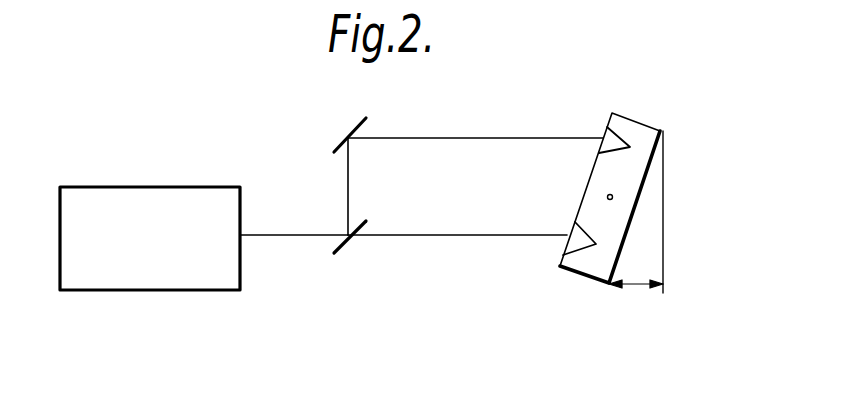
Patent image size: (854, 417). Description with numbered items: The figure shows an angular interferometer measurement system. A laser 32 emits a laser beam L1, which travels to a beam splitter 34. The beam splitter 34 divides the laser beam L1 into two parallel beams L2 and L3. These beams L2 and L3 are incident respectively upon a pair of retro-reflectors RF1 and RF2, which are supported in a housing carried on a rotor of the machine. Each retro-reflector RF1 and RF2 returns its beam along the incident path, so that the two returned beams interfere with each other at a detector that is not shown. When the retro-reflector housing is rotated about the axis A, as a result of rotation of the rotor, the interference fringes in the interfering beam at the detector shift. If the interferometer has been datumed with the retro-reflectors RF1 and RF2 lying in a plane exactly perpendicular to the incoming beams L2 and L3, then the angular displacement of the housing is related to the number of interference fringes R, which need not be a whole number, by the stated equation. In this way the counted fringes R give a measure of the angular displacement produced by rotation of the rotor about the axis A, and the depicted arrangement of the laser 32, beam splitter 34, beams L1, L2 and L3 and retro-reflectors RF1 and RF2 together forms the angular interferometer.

The laser 32 is at (132, 265).
The beam splitter 34 is at (326, 183).
The laser beam L1 is at (290, 240).
The parallel beam L2 is at (462, 136).
The parallel beam L3 is at (411, 240).
The axis A is at (607, 196).
The retro-reflector RF1 is at (608, 128).
The retro-reflector RF2 is at (565, 248).
The number of interference fringes R is at (636, 299).